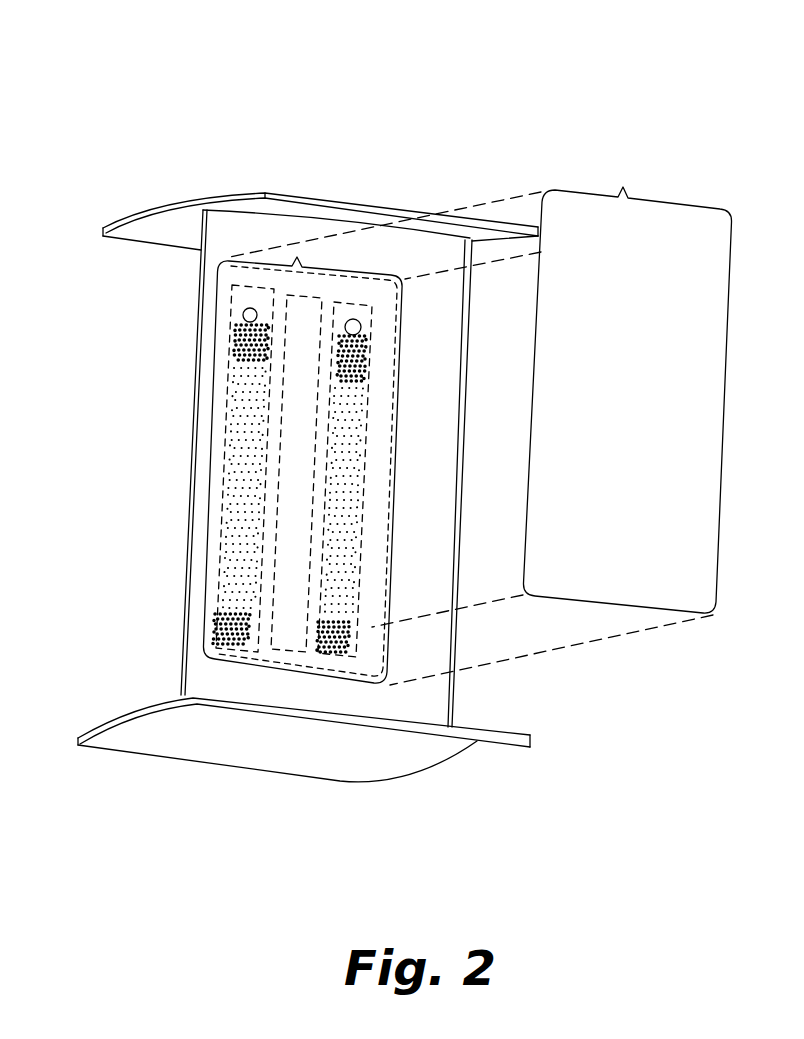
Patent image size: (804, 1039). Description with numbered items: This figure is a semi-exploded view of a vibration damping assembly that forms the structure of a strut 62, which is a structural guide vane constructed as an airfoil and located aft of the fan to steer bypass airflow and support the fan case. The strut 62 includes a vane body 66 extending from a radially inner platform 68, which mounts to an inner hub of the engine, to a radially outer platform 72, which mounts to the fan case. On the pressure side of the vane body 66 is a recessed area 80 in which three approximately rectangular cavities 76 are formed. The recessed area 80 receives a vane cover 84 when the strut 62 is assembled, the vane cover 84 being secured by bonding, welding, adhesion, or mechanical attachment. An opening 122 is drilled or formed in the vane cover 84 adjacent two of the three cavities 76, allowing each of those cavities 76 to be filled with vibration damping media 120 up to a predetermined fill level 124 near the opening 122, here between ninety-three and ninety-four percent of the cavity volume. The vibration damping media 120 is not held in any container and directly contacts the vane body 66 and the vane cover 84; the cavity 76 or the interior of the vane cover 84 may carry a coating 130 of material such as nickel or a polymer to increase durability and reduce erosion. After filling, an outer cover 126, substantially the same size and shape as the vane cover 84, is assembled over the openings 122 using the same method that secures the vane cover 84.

The strut 62 is at (660, 47).
The radially outer platform 72 is at (388, 207).
The vane body 66 is at (443, 423).
The radially inner platform 68 is at (507, 733).
The cavities 76 is at (350, 400).
The recessed area 80 is at (375, 580).
The vane cover 84 is at (398, 490).
The vibration damping media 120 is at (233, 613).
The opening 122 is at (243, 311).
The fill level 124 is at (235, 330).
The outer cover 126 is at (692, 560).
The coating 130 is at (343, 547).